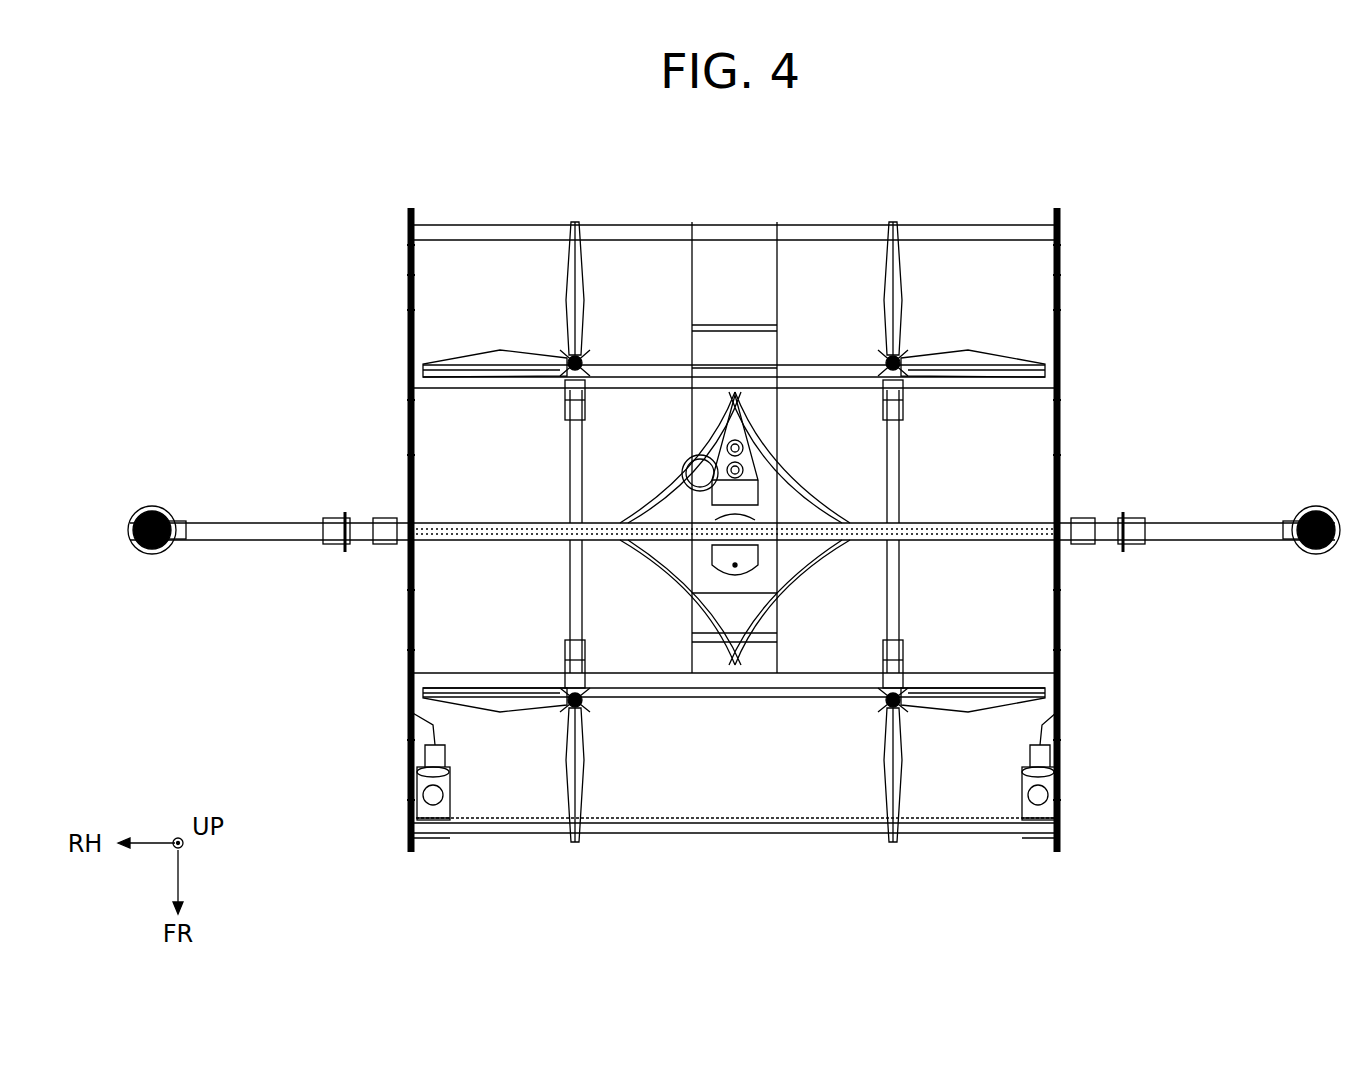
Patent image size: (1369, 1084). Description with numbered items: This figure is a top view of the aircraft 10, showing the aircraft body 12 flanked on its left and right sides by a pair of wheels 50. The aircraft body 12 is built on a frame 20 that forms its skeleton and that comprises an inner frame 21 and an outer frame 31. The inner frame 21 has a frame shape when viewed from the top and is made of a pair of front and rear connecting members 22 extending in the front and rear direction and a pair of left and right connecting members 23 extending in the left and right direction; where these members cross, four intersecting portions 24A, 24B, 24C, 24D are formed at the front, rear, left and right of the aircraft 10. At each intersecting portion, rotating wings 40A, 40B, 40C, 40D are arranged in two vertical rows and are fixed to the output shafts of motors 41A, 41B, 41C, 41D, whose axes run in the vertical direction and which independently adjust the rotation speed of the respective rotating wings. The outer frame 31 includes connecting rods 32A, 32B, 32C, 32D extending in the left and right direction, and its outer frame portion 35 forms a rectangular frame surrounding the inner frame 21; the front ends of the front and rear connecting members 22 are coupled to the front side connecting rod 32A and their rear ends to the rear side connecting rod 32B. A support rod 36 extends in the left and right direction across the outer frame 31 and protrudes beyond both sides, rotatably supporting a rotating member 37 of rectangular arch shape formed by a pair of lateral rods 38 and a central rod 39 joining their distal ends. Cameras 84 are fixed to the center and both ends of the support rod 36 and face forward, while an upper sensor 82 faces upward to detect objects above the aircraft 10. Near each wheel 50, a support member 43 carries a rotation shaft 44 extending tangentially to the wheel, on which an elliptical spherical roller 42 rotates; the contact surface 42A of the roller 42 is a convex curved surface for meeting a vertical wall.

The aircraft 10 is at (1020, 160).
The aircraft body 12 is at (815, 875).
The frame 20 is at (497, 222).
The inner frame 21 is at (780, 350).
The front and rear connecting members 22 is at (568, 518).
The left and right connecting members 23 is at (715, 362).
The intersecting portion 24A is at (560, 715).
The intersecting portion 24B is at (880, 715).
The intersecting portion 24C is at (555, 400).
The intersecting portion 24D is at (905, 398).
The outer frame 31 is at (845, 222).
The front side connecting rod 32A is at (730, 835).
The rear side connecting rod 32B is at (725, 222).
The connecting rod 32C is at (780, 700).
The connecting rod 32D is at (785, 395).
The outer frame portion 35 is at (515, 835).
The support rod 36 is at (290, 522).
The rotating member 37 is at (495, 545).
The lateral rods 38 is at (345, 555).
The central rod 39 is at (538, 545).
The rotating wings 40A is at (470, 700).
The rotating wings 40B is at (965, 700).
The rotating wings 40C is at (565, 282).
The rotating wings 40D is at (905, 280).
The motor 41A is at (590, 703).
The motor 41B is at (905, 703).
The motor 41C is at (585, 360).
The motor 41D is at (880, 360).
The roller 42 is at (440, 840).
The contact surface 42A is at (432, 850).
The support member 43 is at (410, 740).
The rotation shaft 44 is at (415, 800).
The wheels 50 is at (410, 740).
The upper sensor 82 is at (690, 450).
The cameras 84 is at (150, 552).